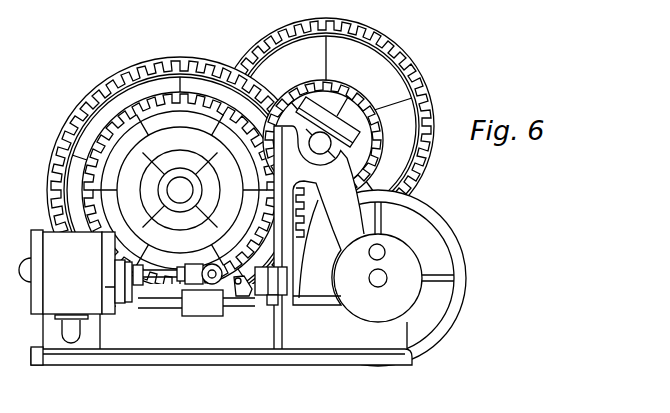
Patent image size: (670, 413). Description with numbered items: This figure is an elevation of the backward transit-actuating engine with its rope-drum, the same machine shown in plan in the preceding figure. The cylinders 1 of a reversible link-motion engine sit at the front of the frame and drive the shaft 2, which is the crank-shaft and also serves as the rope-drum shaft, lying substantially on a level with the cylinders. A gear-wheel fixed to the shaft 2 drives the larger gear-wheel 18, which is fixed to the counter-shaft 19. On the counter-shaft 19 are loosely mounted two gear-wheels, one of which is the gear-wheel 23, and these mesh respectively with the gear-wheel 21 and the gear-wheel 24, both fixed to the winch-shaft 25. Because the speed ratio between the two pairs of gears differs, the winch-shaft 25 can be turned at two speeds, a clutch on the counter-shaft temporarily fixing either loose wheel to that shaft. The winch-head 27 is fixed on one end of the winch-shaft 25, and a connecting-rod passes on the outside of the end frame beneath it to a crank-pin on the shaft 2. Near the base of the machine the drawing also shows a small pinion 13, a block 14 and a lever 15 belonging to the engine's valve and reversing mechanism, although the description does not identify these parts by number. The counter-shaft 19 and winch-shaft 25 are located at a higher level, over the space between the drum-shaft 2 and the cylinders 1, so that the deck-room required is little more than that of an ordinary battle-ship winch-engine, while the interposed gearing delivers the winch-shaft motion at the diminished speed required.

The cylinder 1 is at (67, 289).
The shaft 2 is at (378, 278).
The pinion 13 is at (182, 274).
The lever block 14 is at (239, 297).
The pawl lever 15 is at (327, 297).
The larger gear-wheel 18 is at (391, 57).
The counter-shaft 19 is at (320, 143).
The gear-wheel 21 is at (157, 77).
The gear-wheel 23 is at (337, 83).
The gear-wheel 24 is at (105, 128).
The winch-shaft 25 is at (180, 190).
The winch-head 27 is at (312, 237).